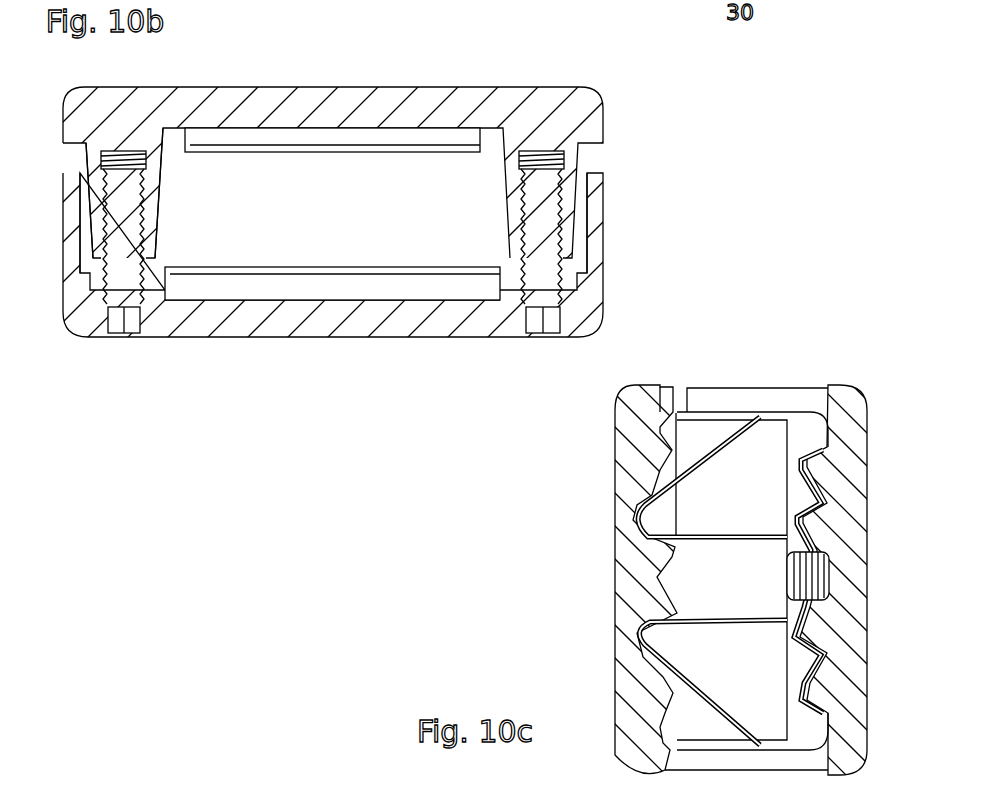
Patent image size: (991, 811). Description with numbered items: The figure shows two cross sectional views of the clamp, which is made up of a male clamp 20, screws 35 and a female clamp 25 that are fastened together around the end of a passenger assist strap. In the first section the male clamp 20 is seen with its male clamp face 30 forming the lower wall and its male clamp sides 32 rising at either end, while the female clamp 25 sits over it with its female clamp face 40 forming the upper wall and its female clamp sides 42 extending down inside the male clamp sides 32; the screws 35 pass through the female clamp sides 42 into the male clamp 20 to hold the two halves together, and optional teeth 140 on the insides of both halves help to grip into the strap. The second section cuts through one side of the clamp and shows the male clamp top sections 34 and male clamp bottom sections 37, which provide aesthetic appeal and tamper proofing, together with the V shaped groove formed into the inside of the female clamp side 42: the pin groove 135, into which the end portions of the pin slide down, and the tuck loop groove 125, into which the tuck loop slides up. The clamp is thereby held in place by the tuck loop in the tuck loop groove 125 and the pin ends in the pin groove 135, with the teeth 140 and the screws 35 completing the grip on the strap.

In FIG. 10B, the male clamp 20 is at (199, 338).
In FIG. 10C, the male clamp 20 is at (858, 385).
In FIG. 10B, the female clamp 25 is at (573, 87).
In FIG. 10C, the female clamp 25 is at (609, 406).
In FIG. 10B, the male clamp face 30 is at (348, 332).
In FIG. 10C, the male clamp face 30 is at (858, 510).
In FIG. 10B, the male clamp sides 32 is at (593, 222).
In FIG. 10C, the male clamp sides 32 is at (748, 598).
In FIG. 10C, the male clamp top sections 34 is at (790, 396).
In FIG. 10B, the screws 35 is at (522, 304).
In FIG. 10C, the screws 35 is at (790, 582).
In FIG. 10C, the male clamp bottom sections 37 is at (740, 760).
In FIG. 10B, the female clamp face 40 is at (356, 100).
In FIG. 10C, the female clamp face 40 is at (620, 565).
In FIG. 10B, the female clamp sides 42 is at (97, 180).
In FIG. 10C, the tuck loop groove 125 is at (730, 690).
In FIG. 10C, the pin groove 135 is at (765, 480).
In FIG. 10B, the teeth 140 is at (236, 150).
In FIG. 10C, the teeth 140 is at (815, 700).